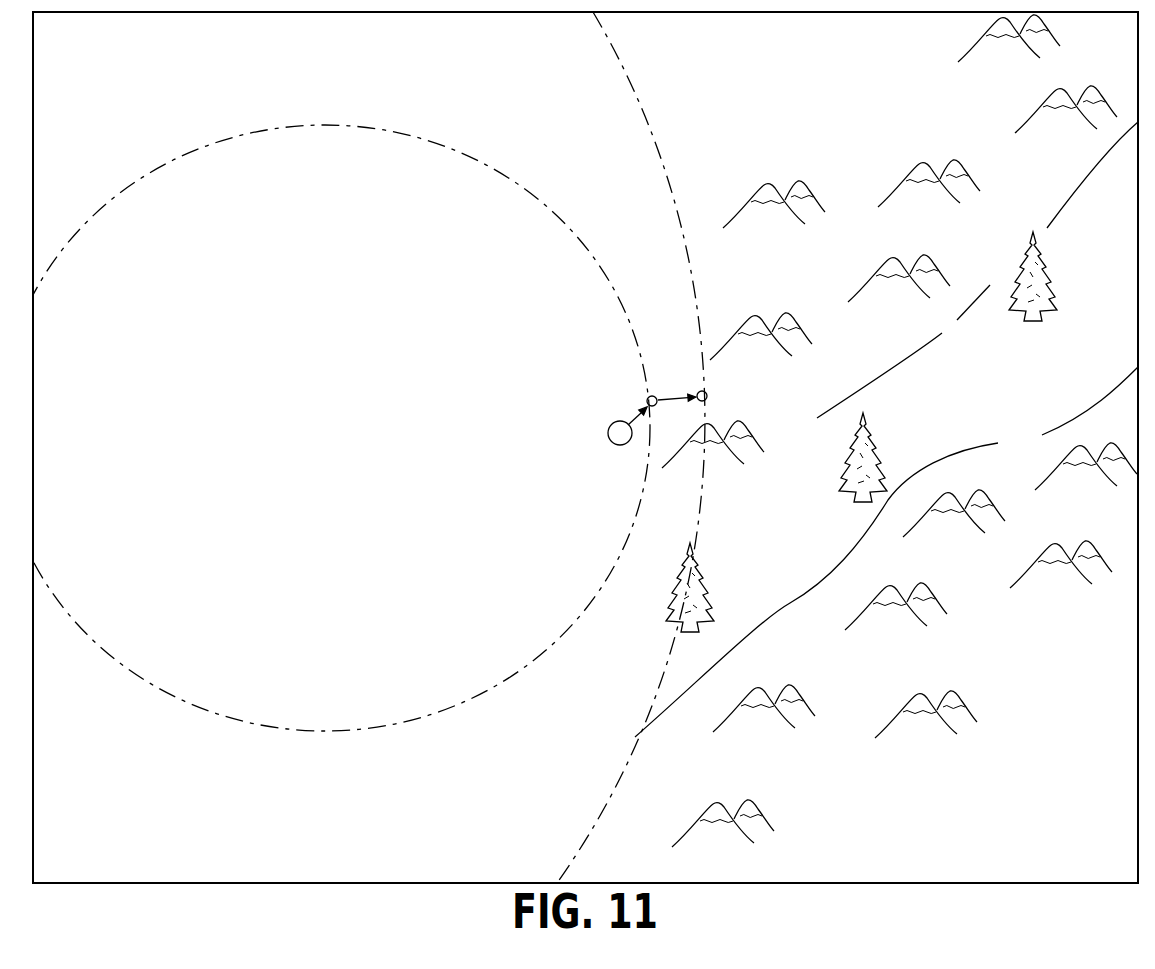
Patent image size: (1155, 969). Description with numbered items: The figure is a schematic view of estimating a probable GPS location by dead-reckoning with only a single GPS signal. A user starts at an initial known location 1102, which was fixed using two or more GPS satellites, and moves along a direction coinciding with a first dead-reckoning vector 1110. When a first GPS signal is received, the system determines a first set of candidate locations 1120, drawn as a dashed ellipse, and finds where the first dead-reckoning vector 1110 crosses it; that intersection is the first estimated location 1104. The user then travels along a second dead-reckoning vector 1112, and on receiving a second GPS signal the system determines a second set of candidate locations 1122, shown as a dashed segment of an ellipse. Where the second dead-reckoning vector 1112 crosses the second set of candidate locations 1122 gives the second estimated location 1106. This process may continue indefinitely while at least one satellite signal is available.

The initial known location 1102 is at (618, 446).
The first estimated location 1104 is at (648, 397).
The second estimated location 1106 is at (710, 395).
The first dead-reckoning vector 1110 is at (633, 413).
The second dead-reckoning vector 1112 is at (670, 393).
The first set of candidate locations 1120 is at (370, 127).
The second set of candidate locations 1122 is at (667, 167).